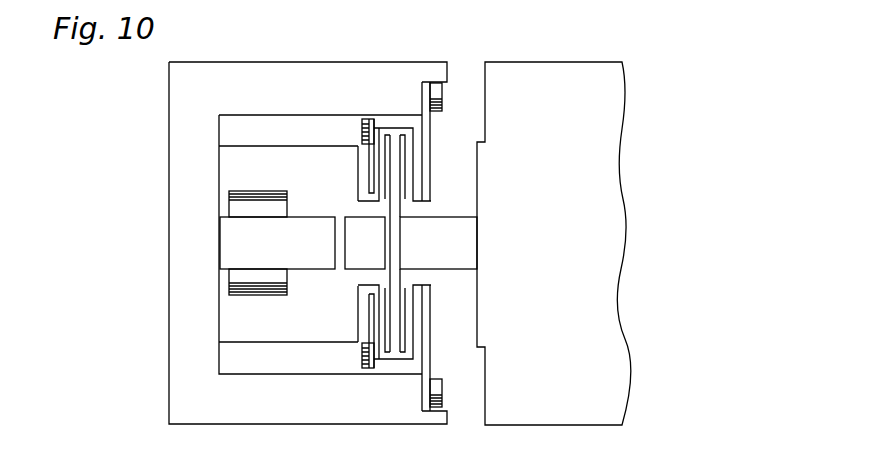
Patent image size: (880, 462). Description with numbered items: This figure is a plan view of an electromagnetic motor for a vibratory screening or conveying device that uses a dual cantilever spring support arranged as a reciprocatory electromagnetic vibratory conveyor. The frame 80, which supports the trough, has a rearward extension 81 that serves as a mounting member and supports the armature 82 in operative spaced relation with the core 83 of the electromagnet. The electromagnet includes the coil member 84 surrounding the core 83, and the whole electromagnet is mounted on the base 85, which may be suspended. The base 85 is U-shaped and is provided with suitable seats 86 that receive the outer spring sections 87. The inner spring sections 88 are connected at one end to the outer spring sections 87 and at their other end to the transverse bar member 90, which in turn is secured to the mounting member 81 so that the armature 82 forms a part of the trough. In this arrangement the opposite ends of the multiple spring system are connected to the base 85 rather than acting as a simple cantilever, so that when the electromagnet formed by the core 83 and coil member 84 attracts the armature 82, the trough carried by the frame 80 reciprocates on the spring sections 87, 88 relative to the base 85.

The frame 80 is at (590, 238).
The rearward extension 81 is at (460, 242).
The armature 82 is at (365, 243).
The core 83 is at (320, 243).
The coil member 84 is at (252, 289).
The base 85 is at (183, 241).
The seats 86 is at (395, 92).
The outer spring sections 87 is at (431, 128).
The inner spring sections 88 is at (410, 157).
The transverse bar member 90 is at (393, 188).